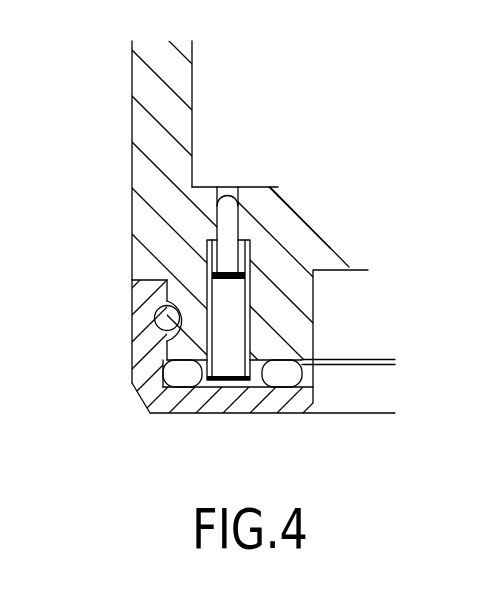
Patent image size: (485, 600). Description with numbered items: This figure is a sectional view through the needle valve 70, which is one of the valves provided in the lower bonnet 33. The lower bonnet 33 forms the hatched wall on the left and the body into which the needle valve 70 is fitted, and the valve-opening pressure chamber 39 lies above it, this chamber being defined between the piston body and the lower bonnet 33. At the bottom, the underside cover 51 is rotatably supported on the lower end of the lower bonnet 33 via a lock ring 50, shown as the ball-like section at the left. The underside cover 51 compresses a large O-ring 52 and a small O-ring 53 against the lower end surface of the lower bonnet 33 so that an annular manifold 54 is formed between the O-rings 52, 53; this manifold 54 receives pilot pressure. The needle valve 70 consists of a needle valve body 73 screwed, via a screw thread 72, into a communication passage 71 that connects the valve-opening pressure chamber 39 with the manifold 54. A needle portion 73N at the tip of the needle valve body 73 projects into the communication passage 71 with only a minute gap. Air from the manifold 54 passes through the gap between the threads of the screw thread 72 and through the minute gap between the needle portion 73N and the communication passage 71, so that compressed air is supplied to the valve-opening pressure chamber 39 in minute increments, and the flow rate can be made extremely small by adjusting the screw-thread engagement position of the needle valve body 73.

The lower bonnet 33 is at (143, 126).
The valve-opening pressure chamber 39 is at (250, 112).
The needle valve 70 is at (276, 141).
The needle portion 73N is at (223, 197).
The communication passage 71 is at (230, 227).
The needle valve body 73 is at (226, 306).
The screw thread 72 is at (250, 330).
The lock ring 50 is at (168, 315).
The underside cover 51 is at (140, 356).
The large O-ring 52 is at (173, 378).
The small O-ring 53 is at (283, 376).
The manifold 54 is at (253, 388).